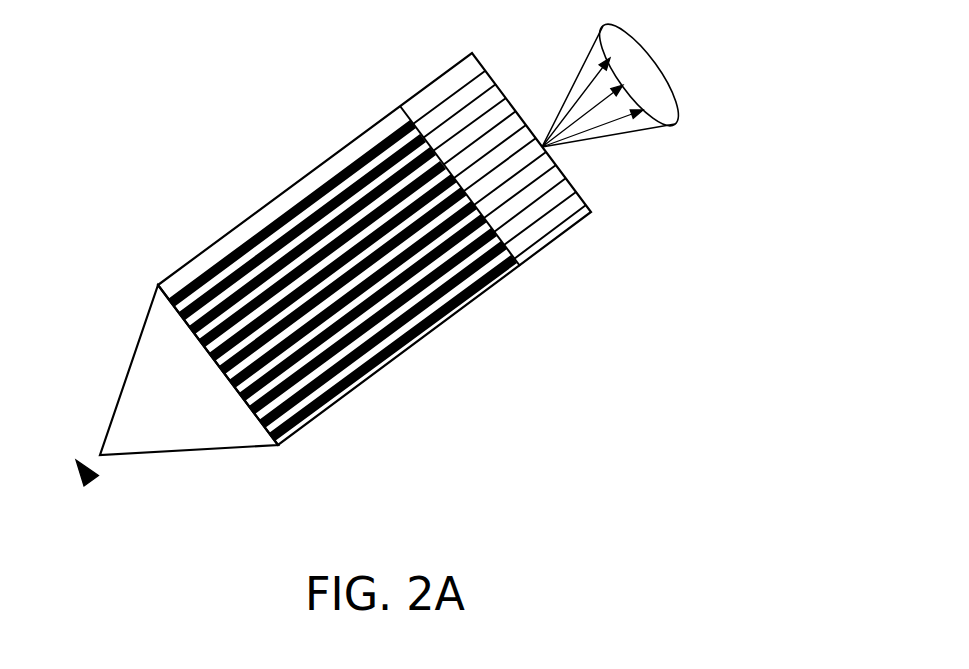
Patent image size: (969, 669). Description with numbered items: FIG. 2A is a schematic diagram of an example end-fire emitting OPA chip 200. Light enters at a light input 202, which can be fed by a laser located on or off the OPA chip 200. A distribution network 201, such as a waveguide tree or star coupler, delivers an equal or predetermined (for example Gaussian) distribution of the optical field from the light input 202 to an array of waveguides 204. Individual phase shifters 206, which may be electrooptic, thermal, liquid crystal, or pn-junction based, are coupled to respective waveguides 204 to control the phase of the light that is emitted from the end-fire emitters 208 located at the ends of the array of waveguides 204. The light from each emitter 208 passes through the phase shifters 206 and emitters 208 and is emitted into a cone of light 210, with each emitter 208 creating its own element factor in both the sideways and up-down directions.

The OPA chip 200 is at (231, 186).
The distribution network 201 is at (203, 417).
The light input 202 is at (91, 481).
The array of waveguides 204 is at (434, 86).
The phase shifters 206 is at (488, 375).
The end-fire emitters 208 is at (650, 250).
The cone of light 210 is at (657, 80).